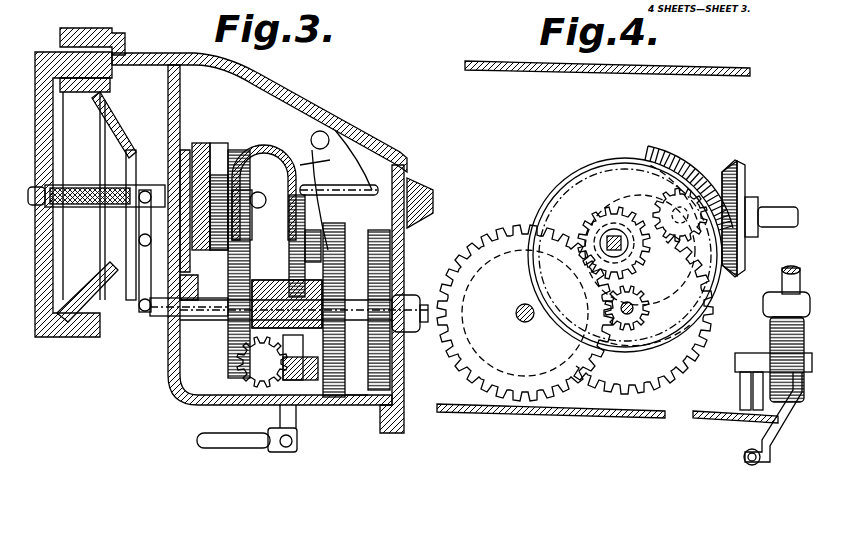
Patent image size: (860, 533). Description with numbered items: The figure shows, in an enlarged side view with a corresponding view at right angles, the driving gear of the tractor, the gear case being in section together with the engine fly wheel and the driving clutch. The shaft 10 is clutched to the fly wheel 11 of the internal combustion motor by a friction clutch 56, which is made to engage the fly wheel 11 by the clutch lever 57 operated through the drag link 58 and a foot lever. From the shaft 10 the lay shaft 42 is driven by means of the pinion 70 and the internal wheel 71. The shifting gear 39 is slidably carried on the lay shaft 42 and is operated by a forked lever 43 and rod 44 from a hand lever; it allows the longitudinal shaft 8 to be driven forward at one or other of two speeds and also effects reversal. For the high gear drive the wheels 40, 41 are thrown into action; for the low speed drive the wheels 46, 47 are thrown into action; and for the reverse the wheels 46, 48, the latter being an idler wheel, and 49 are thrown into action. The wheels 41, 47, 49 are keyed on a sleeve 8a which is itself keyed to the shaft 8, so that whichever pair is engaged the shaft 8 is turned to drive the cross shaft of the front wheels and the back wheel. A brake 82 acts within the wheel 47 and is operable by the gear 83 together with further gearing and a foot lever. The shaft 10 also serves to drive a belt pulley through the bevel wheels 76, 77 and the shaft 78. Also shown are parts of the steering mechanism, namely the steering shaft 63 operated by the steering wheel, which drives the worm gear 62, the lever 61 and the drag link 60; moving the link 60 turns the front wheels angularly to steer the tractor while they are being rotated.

In FIG. 3, the longitudinal shaft 8 is at (162, 325).
In FIG. 4, the longitudinal shaft 8 is at (516, 312).
In FIG. 3, the sleeve 8a is at (424, 292).
In FIG. 3, the shaft 10 is at (143, 185).
In FIG. 4, the shaft 10 is at (695, 190).
In FIG. 3, the fly wheel 11 is at (60, 337).
In FIG. 3, the shifting gear 39 is at (318, 172).
In FIG. 4, the shifting gear 39 is at (612, 228).
In FIG. 3, the wheel 40 is at (278, 98).
In FIG. 4, the wheel 40 is at (586, 232).
In FIG. 3, the wheel 41 is at (228, 375).
In FIG. 4, the wheel 41 is at (512, 225).
In FIG. 3, the lay shaft 42 is at (325, 235).
In FIG. 4, the lay shaft 42 is at (590, 278).
In FIG. 3, the forked lever 43 is at (313, 177).
In FIG. 3, the rod 44 is at (355, 235).
In FIG. 3, the wheel 46 is at (313, 225).
In FIG. 4, the wheel 46 is at (645, 297).
In FIG. 3, the wheel 47 is at (352, 400).
In FIG. 4, the wheel 47 is at (583, 380).
In FIG. 4, the idler wheel 48 is at (648, 348).
In FIG. 3, the wheel 49 is at (388, 390).
In FIG. 4, the wheel 49 is at (520, 367).
In FIG. 3, the friction clutch 56 is at (88, 120).
In FIG. 3, the clutch lever 57 is at (143, 277).
In FIG. 3, the drag link 58 is at (205, 330).
In FIG. 3, the drag link 60 is at (240, 442).
In FIG. 4, the drag link 60 is at (746, 461).
In FIG. 3, the lever 61 is at (297, 422).
In FIG. 4, the lever 61 is at (787, 443).
In FIG. 3, the worm gear 62 is at (263, 380).
In FIG. 4, the worm gear 62 is at (768, 330).
In FIG. 3, the steering shaft 63 is at (425, 193).
In FIG. 4, the steering shaft 63 is at (779, 287).
In FIG. 3, the pinion 70 is at (225, 170).
In FIG. 4, the pinion 70 is at (668, 175).
In FIG. 3, the internal wheel 71 is at (223, 165).
In FIG. 4, the internal wheel 71 is at (618, 182).
In FIG. 3, the bevel wheel 76 is at (193, 150).
In FIG. 4, the bevel wheel 76 is at (692, 173).
In FIG. 3, the bevel wheel 77 is at (302, 152).
In FIG. 4, the bevel wheel 77 is at (735, 168).
In FIG. 3, the shaft 78 is at (262, 190).
In FIG. 4, the shaft 78 is at (770, 210).
In FIG. 3, the brake 82 is at (353, 400).
In FIG. 3, the gear 83 is at (273, 407).